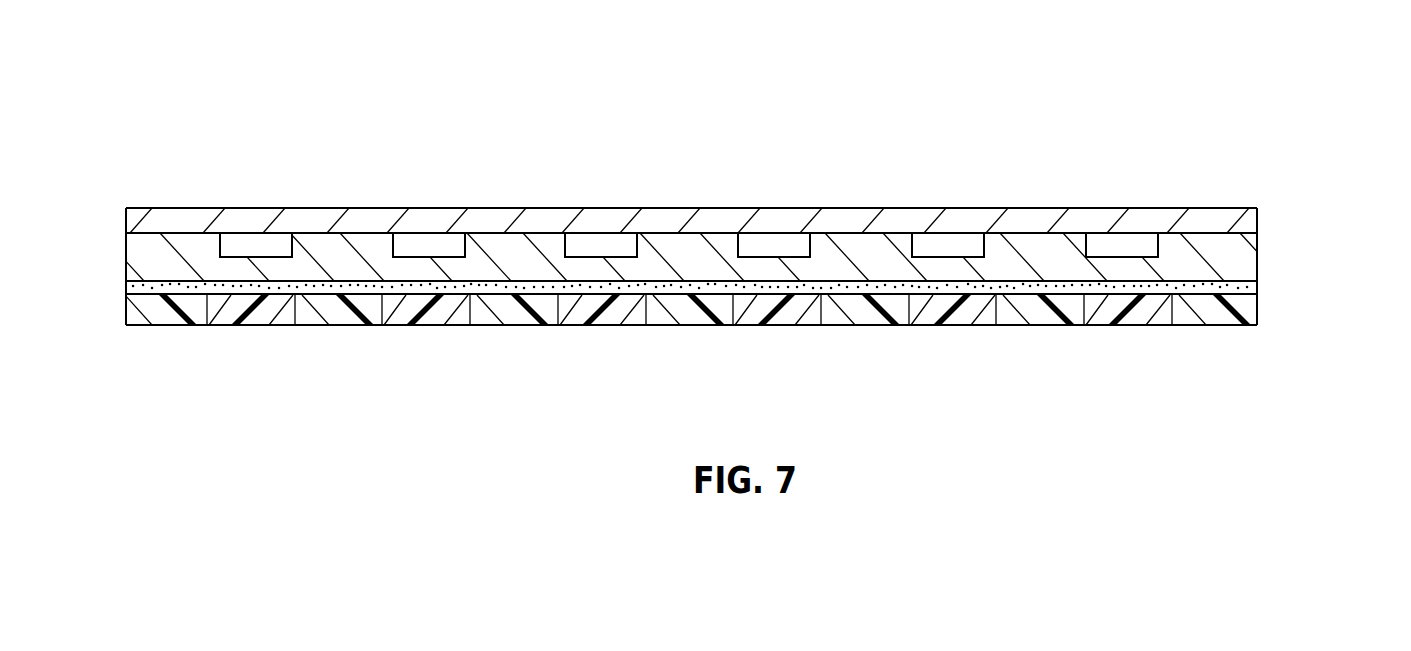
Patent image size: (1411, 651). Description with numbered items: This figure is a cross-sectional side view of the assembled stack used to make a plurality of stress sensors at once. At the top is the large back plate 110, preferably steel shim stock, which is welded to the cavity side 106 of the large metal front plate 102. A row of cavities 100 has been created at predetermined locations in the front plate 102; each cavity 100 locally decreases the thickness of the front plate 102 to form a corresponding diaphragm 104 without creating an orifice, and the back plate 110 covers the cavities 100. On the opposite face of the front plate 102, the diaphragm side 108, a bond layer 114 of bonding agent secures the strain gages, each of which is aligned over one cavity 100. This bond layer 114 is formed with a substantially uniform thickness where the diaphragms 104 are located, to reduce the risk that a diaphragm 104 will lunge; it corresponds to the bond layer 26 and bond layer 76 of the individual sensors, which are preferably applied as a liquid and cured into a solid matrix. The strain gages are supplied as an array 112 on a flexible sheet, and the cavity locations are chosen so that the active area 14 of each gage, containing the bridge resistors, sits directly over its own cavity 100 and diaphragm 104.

The active area 14 is at (257, 315).
The bond layer 26 is at (1215, 289).
The bond layer 76 is at (1180, 288).
The cavity 100 is at (258, 245).
The front plate 102 is at (162, 255).
The diaphragm 104 is at (253, 270).
The cavity side 106 is at (208, 232).
The diaphragm side 108 is at (182, 283).
The back plate 110 is at (362, 220).
The array 112 is at (1217, 310).
The bond layer 114 is at (1257, 293).